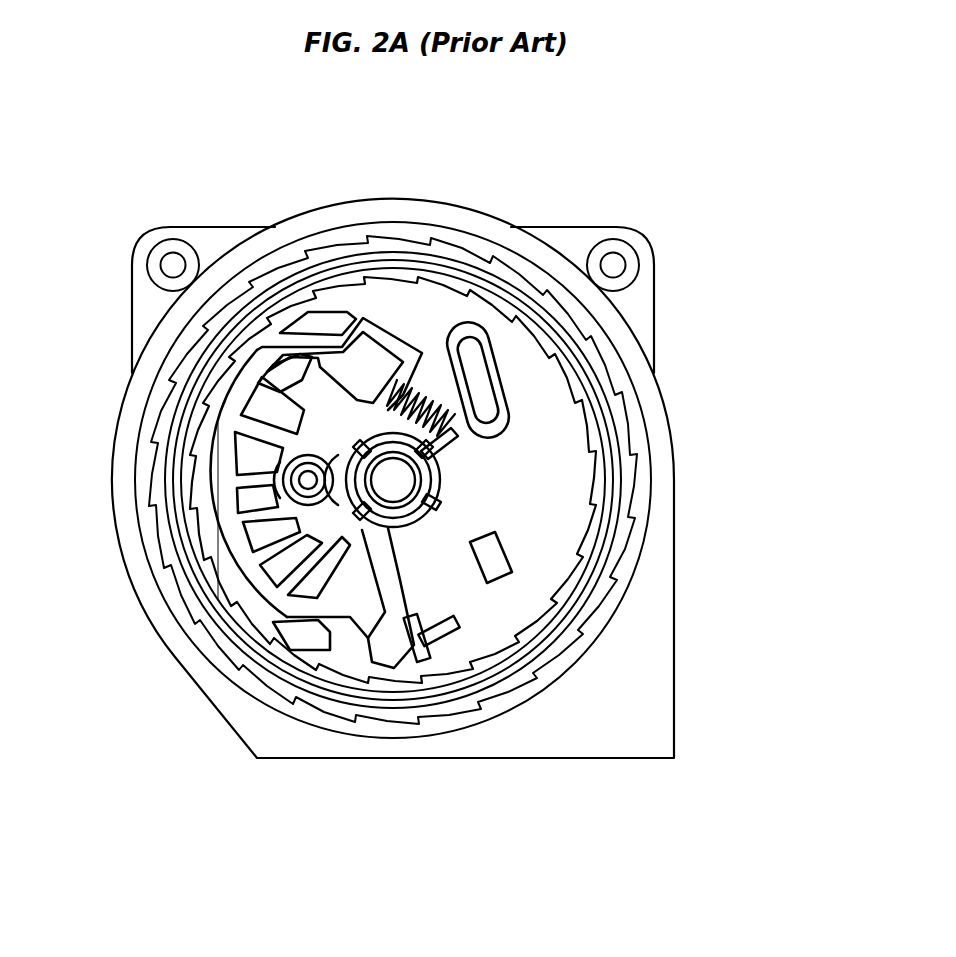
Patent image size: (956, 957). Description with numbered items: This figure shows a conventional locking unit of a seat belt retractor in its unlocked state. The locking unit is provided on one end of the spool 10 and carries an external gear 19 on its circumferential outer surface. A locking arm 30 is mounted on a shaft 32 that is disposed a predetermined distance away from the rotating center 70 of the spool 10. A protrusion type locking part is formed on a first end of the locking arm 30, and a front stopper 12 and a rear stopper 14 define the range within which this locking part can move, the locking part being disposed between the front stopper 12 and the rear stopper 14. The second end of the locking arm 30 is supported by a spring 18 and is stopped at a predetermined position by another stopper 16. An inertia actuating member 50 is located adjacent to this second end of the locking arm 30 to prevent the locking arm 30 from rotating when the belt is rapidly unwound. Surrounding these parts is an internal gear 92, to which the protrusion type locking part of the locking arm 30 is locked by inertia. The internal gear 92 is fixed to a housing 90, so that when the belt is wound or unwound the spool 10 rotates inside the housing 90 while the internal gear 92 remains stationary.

The spool 10 is at (503, 613).
The front stopper 12 is at (313, 637).
The rear stopper 14 is at (440, 632).
The stopper 16 is at (325, 315).
The spring 18 is at (415, 410).
The external gear 19 is at (617, 418).
The locking arm 30 is at (297, 557).
The shaft 32 is at (298, 480).
The inertia actuating member 50 is at (483, 377).
The rotating center 70 is at (388, 478).
The housing 90 is at (642, 665).
The internal gear 92 is at (593, 515).